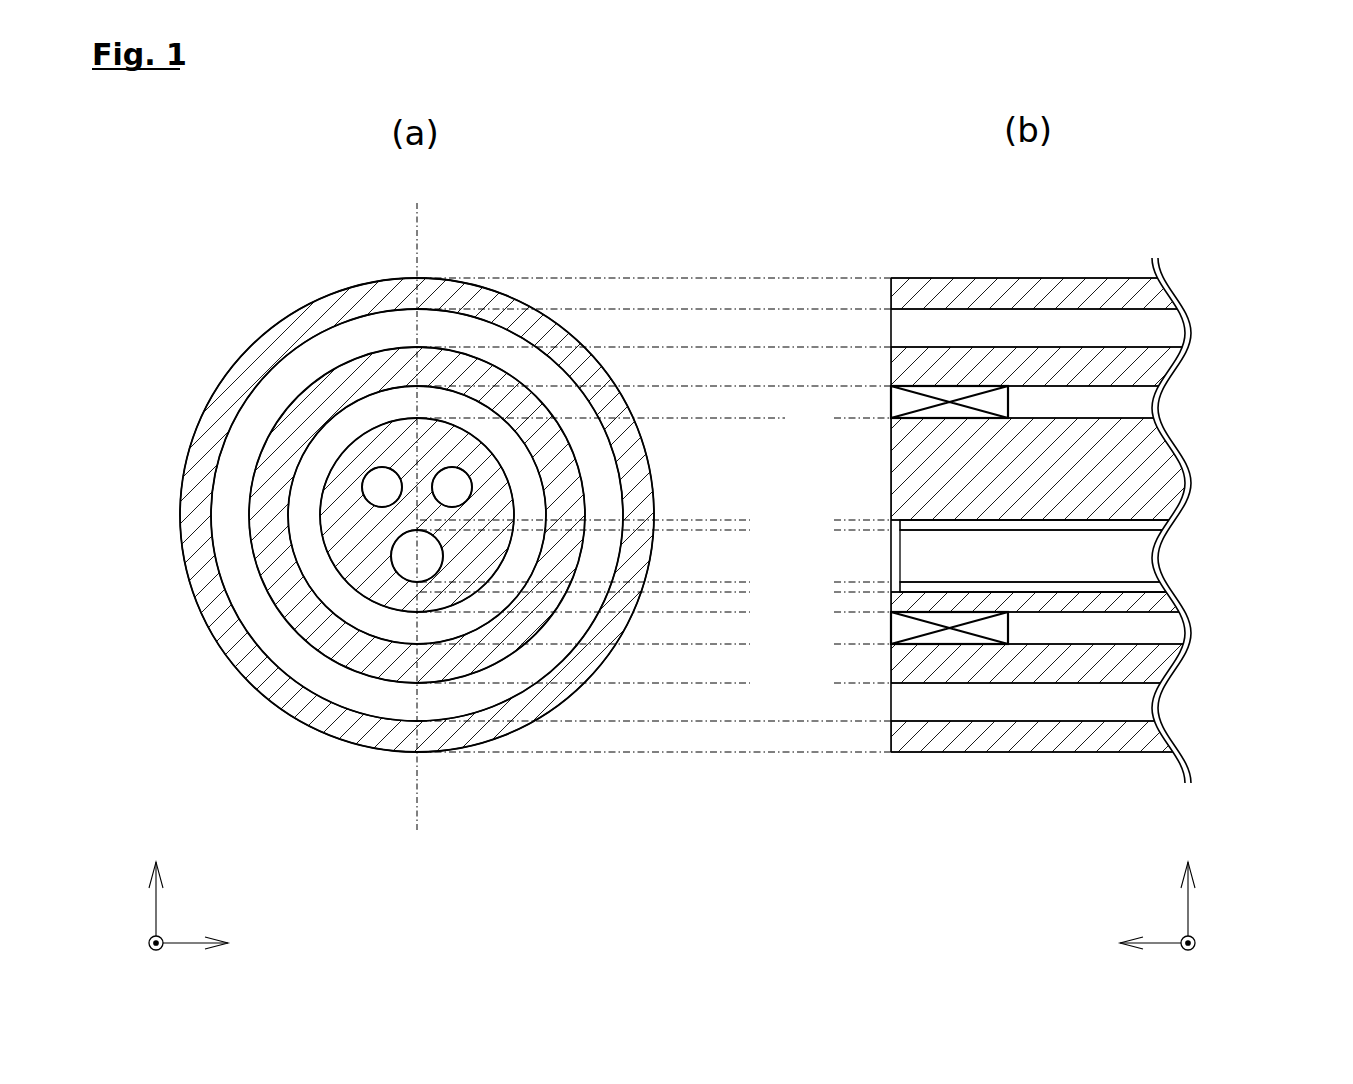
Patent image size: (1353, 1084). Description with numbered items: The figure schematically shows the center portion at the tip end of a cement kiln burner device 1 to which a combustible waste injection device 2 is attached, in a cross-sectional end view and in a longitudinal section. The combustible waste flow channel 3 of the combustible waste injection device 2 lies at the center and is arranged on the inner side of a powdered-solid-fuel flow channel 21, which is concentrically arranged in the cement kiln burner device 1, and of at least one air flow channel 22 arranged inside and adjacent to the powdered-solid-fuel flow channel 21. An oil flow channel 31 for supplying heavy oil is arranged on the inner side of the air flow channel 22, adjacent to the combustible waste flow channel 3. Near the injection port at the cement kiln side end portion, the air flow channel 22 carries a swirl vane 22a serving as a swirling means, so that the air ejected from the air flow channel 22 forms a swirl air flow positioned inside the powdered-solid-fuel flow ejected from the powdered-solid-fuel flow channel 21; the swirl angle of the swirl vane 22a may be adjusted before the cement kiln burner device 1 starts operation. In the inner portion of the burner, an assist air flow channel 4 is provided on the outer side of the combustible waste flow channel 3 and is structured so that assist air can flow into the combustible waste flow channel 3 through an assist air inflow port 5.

The cement kiln burner device 1 is at (195, 203).
The combustible waste injection device 2 is at (403, 572).
The combustible waste flow channel 3 is at (1142, 551).
The assist air flow channel 4 is at (1152, 525).
The assist air inflow port 5 is at (915, 580).
The powdered-solid-fuel flow channel 21 is at (263, 400).
The air flow channel 22 is at (310, 549).
The swirl vane 22a is at (891, 401).
The oil flow channel 31 is at (381, 468).